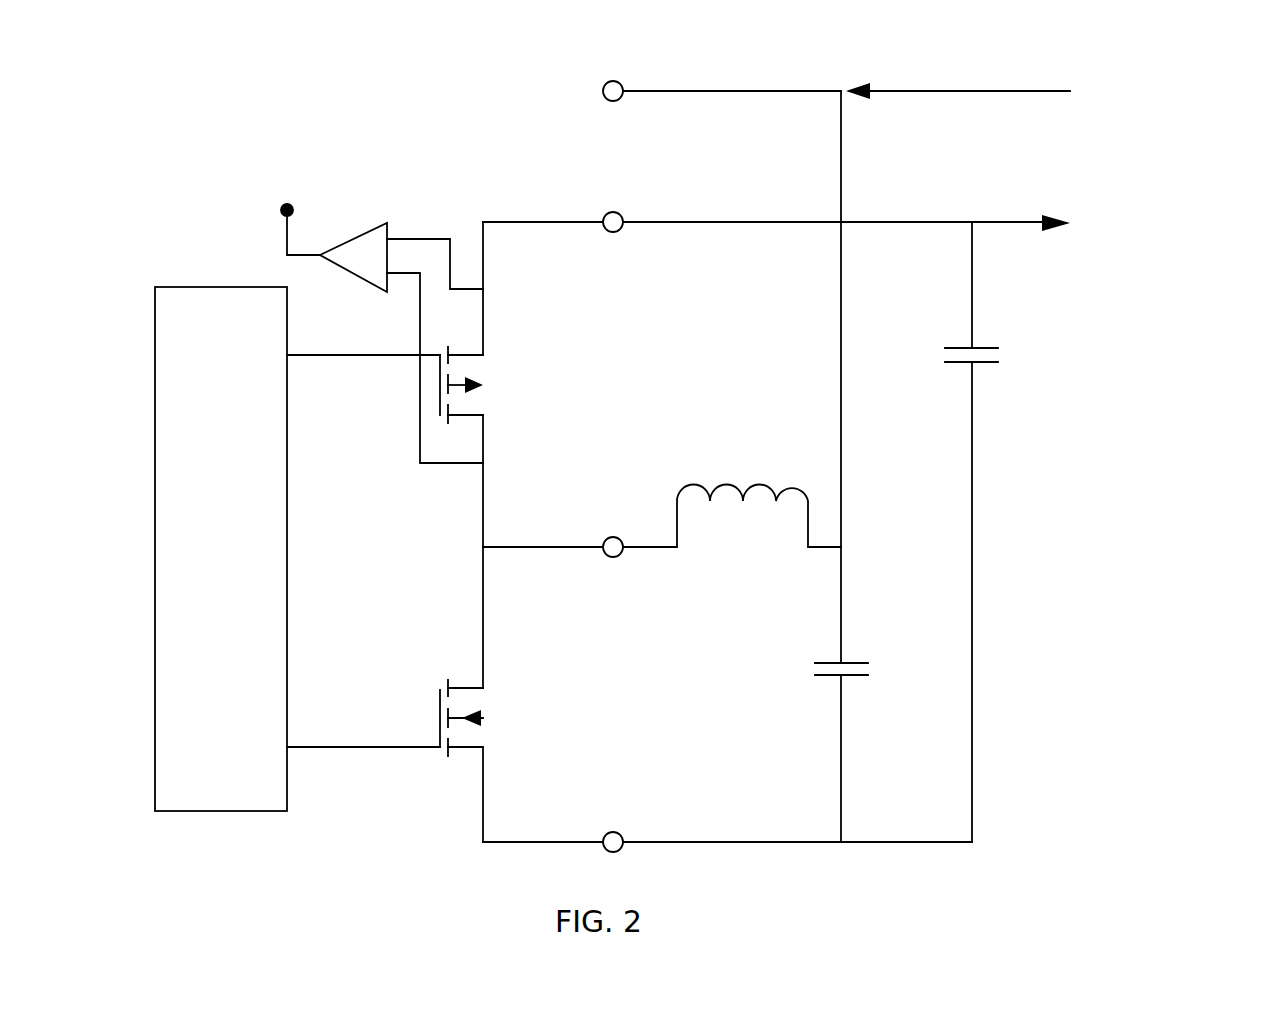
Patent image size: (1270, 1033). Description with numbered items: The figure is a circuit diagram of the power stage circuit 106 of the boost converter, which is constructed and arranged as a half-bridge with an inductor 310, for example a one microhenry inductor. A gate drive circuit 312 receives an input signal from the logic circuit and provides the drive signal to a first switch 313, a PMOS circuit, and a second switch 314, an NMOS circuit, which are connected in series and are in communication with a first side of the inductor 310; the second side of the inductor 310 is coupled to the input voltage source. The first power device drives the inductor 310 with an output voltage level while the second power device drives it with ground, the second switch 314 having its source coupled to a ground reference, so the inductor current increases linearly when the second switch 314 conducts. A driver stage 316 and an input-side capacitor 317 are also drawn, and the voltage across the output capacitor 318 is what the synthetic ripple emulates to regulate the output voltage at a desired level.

The power stage circuit 106 is at (1163, 107).
The inductor 310 is at (730, 480).
The gate drive circuit 312 is at (205, 684).
The first switch 313 is at (492, 385).
The second switch 314 is at (492, 732).
The driver amplifier 316 is at (355, 222).
The input capacitor 317 is at (835, 675).
The output capacitor 318 is at (973, 355).